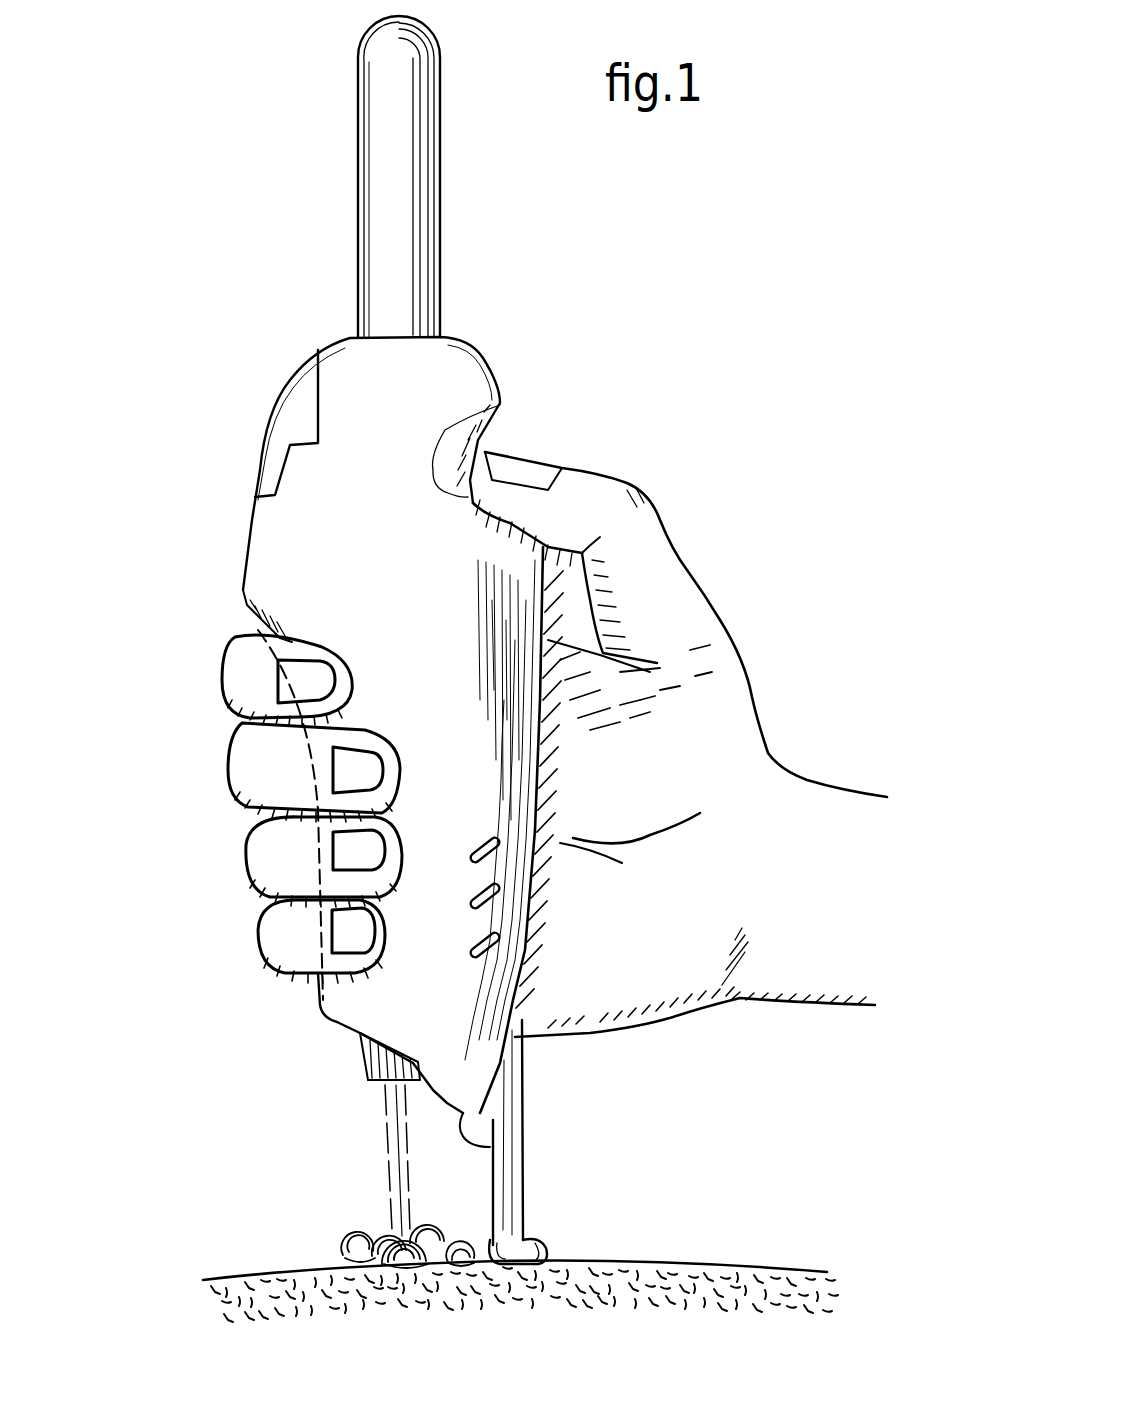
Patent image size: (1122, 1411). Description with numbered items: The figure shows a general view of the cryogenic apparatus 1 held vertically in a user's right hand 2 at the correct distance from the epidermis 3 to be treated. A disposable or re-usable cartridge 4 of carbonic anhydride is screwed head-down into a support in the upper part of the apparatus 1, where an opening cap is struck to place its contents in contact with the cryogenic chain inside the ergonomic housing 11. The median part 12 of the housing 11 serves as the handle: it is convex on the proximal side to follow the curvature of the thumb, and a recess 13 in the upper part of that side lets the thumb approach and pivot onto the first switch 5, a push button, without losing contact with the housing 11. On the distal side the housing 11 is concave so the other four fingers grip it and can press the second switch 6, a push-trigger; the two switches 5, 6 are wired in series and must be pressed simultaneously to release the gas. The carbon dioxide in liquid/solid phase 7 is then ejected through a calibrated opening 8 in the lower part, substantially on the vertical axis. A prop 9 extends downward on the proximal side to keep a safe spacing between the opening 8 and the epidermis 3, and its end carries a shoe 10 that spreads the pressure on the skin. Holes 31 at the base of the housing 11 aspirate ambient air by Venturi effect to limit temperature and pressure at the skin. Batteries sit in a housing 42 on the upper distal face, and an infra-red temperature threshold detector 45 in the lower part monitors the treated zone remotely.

The apparatus 1 is at (565, 240).
The user's right hand 2 is at (716, 722).
The epidermis 3 is at (310, 1265).
The cartridge 4 is at (358, 173).
The first switch 5 is at (545, 585).
The second switch 6 is at (245, 607).
The CO2 in liquid/solid phase 7 is at (362, 1161).
The calibrated opening 8 is at (367, 1047).
The prop 9 is at (523, 1180).
The shoe 10 is at (543, 1243).
The housing 11 is at (433, 390).
The median part 12 is at (373, 715).
The recess 13 is at (500, 405).
The holes 31 is at (500, 850).
The battery housing 42 is at (290, 408).
The temperature threshold detector 45 is at (490, 1145).